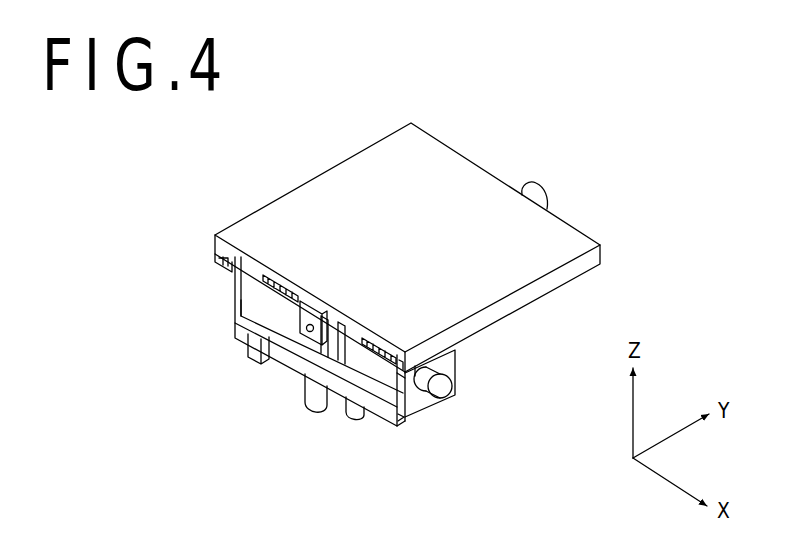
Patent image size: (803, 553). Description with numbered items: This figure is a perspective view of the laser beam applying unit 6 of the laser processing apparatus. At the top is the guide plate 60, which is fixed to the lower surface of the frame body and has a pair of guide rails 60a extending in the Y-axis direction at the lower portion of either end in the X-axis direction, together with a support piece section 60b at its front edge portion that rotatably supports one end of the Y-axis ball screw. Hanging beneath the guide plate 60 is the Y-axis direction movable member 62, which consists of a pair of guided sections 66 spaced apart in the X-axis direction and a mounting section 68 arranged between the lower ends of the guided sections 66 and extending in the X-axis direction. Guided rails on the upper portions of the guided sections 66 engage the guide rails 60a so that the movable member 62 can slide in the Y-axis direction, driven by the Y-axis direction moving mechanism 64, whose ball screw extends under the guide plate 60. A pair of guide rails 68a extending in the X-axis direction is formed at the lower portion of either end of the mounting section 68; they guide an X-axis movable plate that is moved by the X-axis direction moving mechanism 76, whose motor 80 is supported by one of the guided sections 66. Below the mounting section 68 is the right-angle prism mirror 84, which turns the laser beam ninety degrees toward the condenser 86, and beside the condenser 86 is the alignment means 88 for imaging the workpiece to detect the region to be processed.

The laser beam applying unit 6 is at (202, 232).
The guide plate 60 is at (433, 150).
The guide rails 60a is at (217, 252).
The support piece section 60b is at (257, 322).
The Y-axis direction movable member 62 is at (364, 374).
The Y-axis direction moving mechanism 64 is at (550, 189).
The guided sections 66 is at (256, 284).
The mounting section 68 is at (387, 415).
The guide rails 68a is at (409, 419).
The X-axis direction moving mechanism 76 is at (454, 404).
The motor 80 is at (441, 384).
The right-angle prism mirror 84 is at (250, 353).
The condenser 86 is at (302, 408).
The alignment means 88 is at (352, 418).